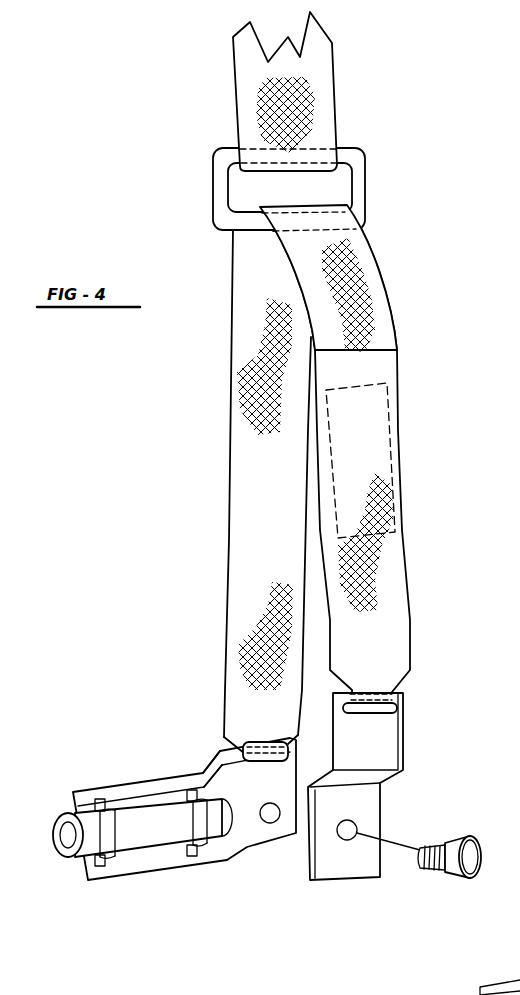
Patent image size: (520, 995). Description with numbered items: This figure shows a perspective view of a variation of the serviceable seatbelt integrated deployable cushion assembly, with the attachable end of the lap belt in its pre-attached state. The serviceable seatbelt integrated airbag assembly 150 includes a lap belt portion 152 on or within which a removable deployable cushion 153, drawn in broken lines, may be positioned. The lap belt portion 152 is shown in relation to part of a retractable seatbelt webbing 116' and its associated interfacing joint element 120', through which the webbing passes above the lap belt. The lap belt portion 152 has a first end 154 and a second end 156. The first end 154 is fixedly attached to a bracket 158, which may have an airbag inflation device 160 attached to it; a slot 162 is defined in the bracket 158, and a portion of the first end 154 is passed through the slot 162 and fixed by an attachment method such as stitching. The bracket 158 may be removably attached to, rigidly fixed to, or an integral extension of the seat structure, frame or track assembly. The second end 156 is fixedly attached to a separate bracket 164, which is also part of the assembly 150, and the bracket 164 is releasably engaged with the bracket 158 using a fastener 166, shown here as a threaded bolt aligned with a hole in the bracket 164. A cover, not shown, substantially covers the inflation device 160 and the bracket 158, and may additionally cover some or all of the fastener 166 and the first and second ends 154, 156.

The retractable seatbelt webbing 116' is at (253, 91).
The interfacing joint element 120' is at (241, 189).
The serviceable seatbelt integrated airbag assembly 150 is at (203, 517).
The lap belt portion 152 is at (257, 362).
The removable deployable cushion 153 is at (358, 511).
The first end 154 is at (250, 735).
The second end 156 is at (377, 683).
The bracket 158 is at (119, 783).
The airbag inflation device 160 is at (143, 837).
The slot 162 is at (214, 762).
The bracket 164 is at (363, 803).
The fastener 166 is at (472, 858).